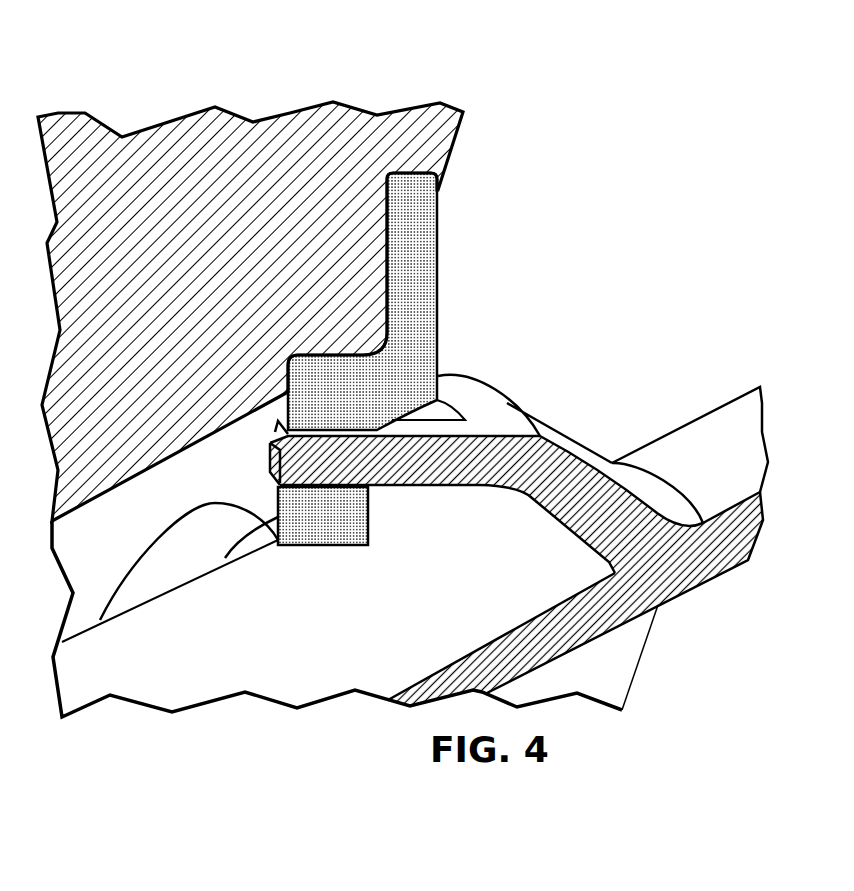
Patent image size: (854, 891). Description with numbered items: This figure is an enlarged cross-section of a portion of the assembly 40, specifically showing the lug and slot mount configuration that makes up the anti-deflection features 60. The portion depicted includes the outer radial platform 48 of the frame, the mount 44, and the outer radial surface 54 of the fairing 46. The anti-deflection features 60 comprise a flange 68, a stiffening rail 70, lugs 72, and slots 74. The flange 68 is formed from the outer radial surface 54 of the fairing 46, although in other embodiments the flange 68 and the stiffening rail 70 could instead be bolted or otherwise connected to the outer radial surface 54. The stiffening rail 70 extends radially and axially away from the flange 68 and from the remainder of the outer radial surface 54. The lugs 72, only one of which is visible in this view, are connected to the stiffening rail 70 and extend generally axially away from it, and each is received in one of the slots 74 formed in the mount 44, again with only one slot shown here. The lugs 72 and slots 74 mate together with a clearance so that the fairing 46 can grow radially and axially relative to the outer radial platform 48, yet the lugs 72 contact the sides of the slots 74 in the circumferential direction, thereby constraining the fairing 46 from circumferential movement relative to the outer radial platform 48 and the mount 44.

The assembly 40 is at (108, 100).
The outer radial platform 48 is at (328, 183).
The mount 44 is at (413, 305).
The slots 74 is at (290, 508).
The anti-deflection features 60 is at (548, 338).
The lugs 72 is at (430, 455).
The stiffening rail 70 is at (580, 485).
The flange 68 is at (693, 437).
The fairing 46 is at (733, 573).
The outer radial surface 54 is at (550, 640).